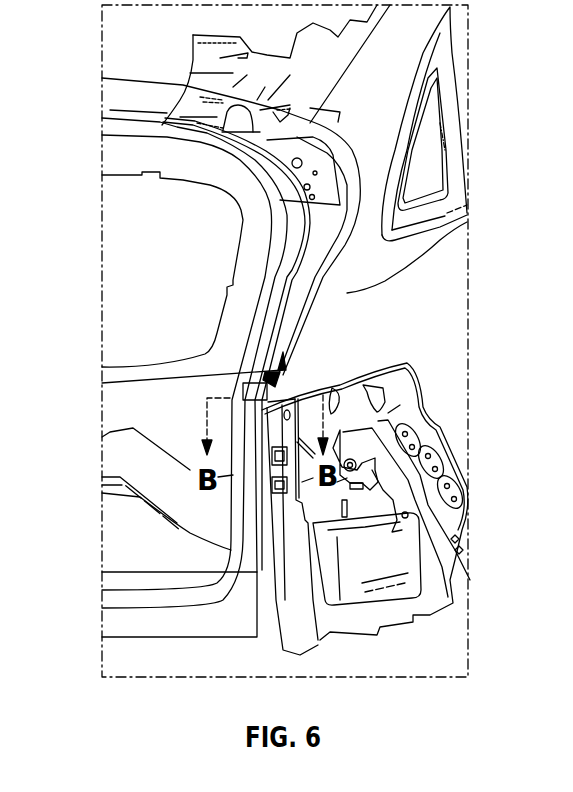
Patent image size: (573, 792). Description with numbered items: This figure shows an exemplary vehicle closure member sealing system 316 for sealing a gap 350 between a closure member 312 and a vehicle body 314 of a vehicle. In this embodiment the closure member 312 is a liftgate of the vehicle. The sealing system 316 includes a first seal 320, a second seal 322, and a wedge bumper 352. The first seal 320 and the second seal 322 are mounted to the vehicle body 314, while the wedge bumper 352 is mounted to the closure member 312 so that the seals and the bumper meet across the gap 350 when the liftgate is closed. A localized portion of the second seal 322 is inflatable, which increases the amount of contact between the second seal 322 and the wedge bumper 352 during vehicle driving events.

The closure member 312 is at (215, 622).
The vehicle body 314 is at (462, 222).
The sealing system 316 is at (280, 357).
The first seal 320 is at (267, 270).
The second seal 322 is at (340, 378).
The gap 350 is at (270, 506).
The wedge bumper 352 is at (258, 402).